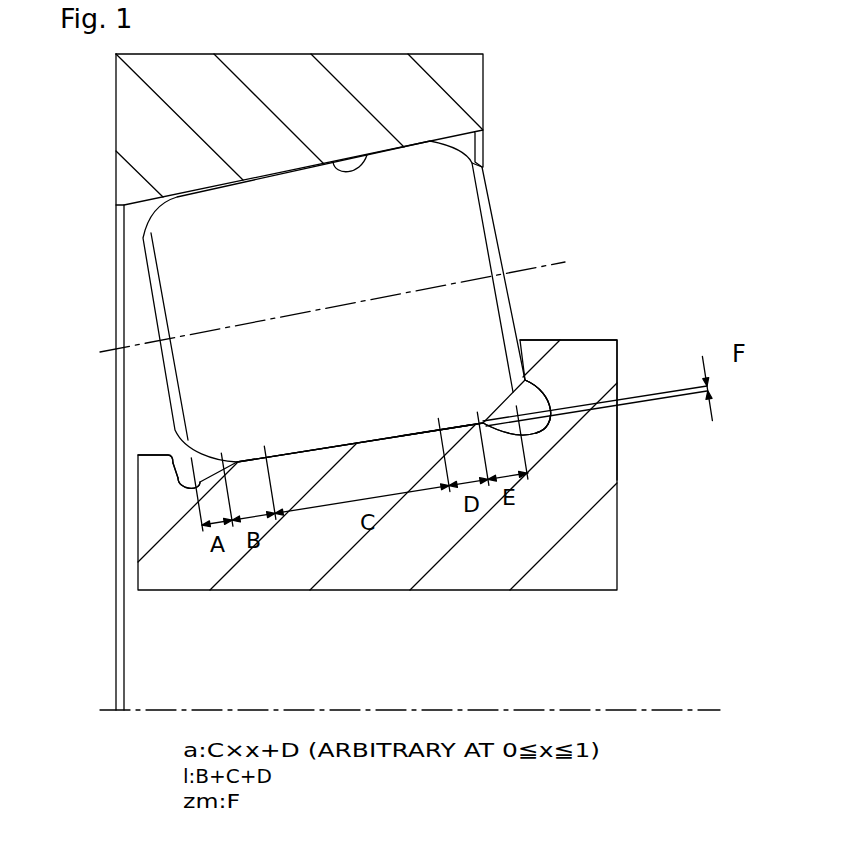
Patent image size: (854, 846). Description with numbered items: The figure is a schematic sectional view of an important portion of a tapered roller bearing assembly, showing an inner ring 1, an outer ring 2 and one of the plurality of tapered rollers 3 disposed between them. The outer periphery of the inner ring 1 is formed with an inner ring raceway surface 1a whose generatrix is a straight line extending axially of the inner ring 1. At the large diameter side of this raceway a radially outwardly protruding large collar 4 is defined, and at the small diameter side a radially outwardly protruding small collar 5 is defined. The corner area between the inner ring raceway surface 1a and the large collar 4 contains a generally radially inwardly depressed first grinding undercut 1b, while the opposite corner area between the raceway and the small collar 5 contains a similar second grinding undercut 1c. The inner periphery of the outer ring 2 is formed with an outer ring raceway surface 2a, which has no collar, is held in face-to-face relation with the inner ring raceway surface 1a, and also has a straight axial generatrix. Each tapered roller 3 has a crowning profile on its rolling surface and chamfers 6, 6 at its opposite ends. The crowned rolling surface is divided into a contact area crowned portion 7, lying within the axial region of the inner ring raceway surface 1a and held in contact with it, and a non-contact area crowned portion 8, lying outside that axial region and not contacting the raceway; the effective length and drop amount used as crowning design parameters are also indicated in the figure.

The inner ring 1 is at (598, 526).
The inner ring raceway surface 1a is at (313, 452).
The first grinding undercut 1b is at (545, 425).
The second grinding undercut 1c is at (178, 480).
The outer ring 2 is at (145, 107).
The outer ring raceway surface 2a is at (368, 157).
The tapered roller 3 is at (447, 213).
The large collar 4 is at (575, 355).
The small collar 5 is at (150, 465).
The chamfer 6 is at (495, 254).
The contact area crowned portion 7 is at (428, 441).
The non-contact area crowned portion 8 is at (180, 465).